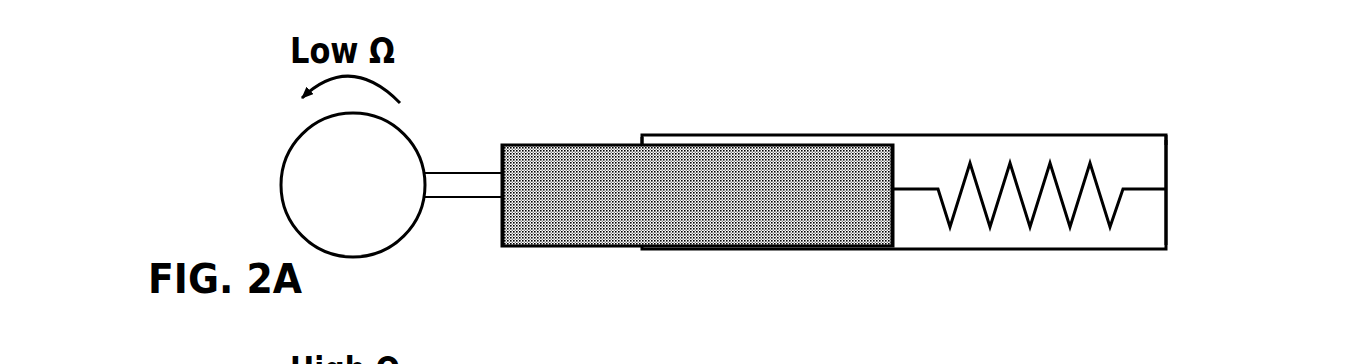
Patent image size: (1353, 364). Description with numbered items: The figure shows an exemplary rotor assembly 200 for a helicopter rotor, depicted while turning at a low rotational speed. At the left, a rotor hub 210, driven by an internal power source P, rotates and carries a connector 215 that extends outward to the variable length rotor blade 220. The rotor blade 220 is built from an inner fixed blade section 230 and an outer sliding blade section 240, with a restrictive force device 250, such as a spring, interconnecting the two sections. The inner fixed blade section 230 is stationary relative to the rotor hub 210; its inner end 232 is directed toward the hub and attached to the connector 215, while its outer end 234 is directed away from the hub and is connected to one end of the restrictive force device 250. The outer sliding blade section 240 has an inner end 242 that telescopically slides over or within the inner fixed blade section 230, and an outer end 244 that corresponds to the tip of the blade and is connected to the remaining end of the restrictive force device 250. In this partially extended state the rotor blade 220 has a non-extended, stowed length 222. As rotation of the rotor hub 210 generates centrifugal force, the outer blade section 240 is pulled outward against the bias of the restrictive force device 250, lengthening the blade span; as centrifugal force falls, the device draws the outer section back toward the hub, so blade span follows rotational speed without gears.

The rotor assembly 200 is at (1246, 130).
The rotor hub 210 is at (403, 138).
The connector 215 is at (455, 198).
The variable length rotor blade 220 is at (1162, 125).
The non-extended length 222 is at (1165, 130).
The inner fixed blade section 230 is at (615, 207).
The inner end 232 is at (502, 238).
The outer end 234 is at (895, 228).
The outer sliding blade section 240 is at (825, 253).
The inner end 242 is at (642, 249).
The outer end 244 is at (1168, 230).
The restrictive force device 250 is at (1048, 209).